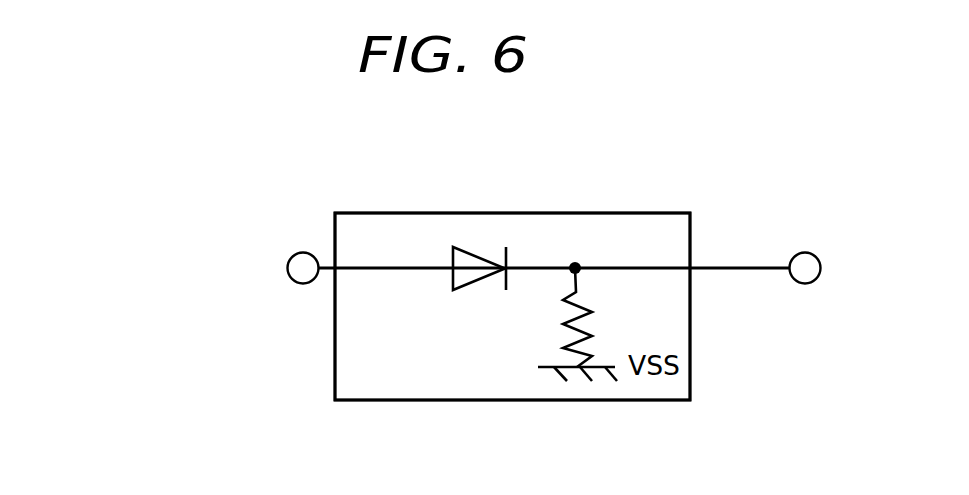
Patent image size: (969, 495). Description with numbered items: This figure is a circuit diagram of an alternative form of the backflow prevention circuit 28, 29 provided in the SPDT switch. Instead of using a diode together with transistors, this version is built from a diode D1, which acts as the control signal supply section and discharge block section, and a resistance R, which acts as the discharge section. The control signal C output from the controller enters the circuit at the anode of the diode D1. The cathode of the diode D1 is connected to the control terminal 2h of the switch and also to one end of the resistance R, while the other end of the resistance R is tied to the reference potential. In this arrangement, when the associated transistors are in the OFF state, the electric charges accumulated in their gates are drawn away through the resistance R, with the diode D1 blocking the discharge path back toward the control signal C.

The control signal C is at (180, 271).
The backflow prevention circuit 28 is at (640, 212).
The backflow prevention circuit 29 is at (512, 306).
The diode D1 is at (473, 283).
The resistance R is at (583, 308).
The control terminal 2h is at (810, 284).